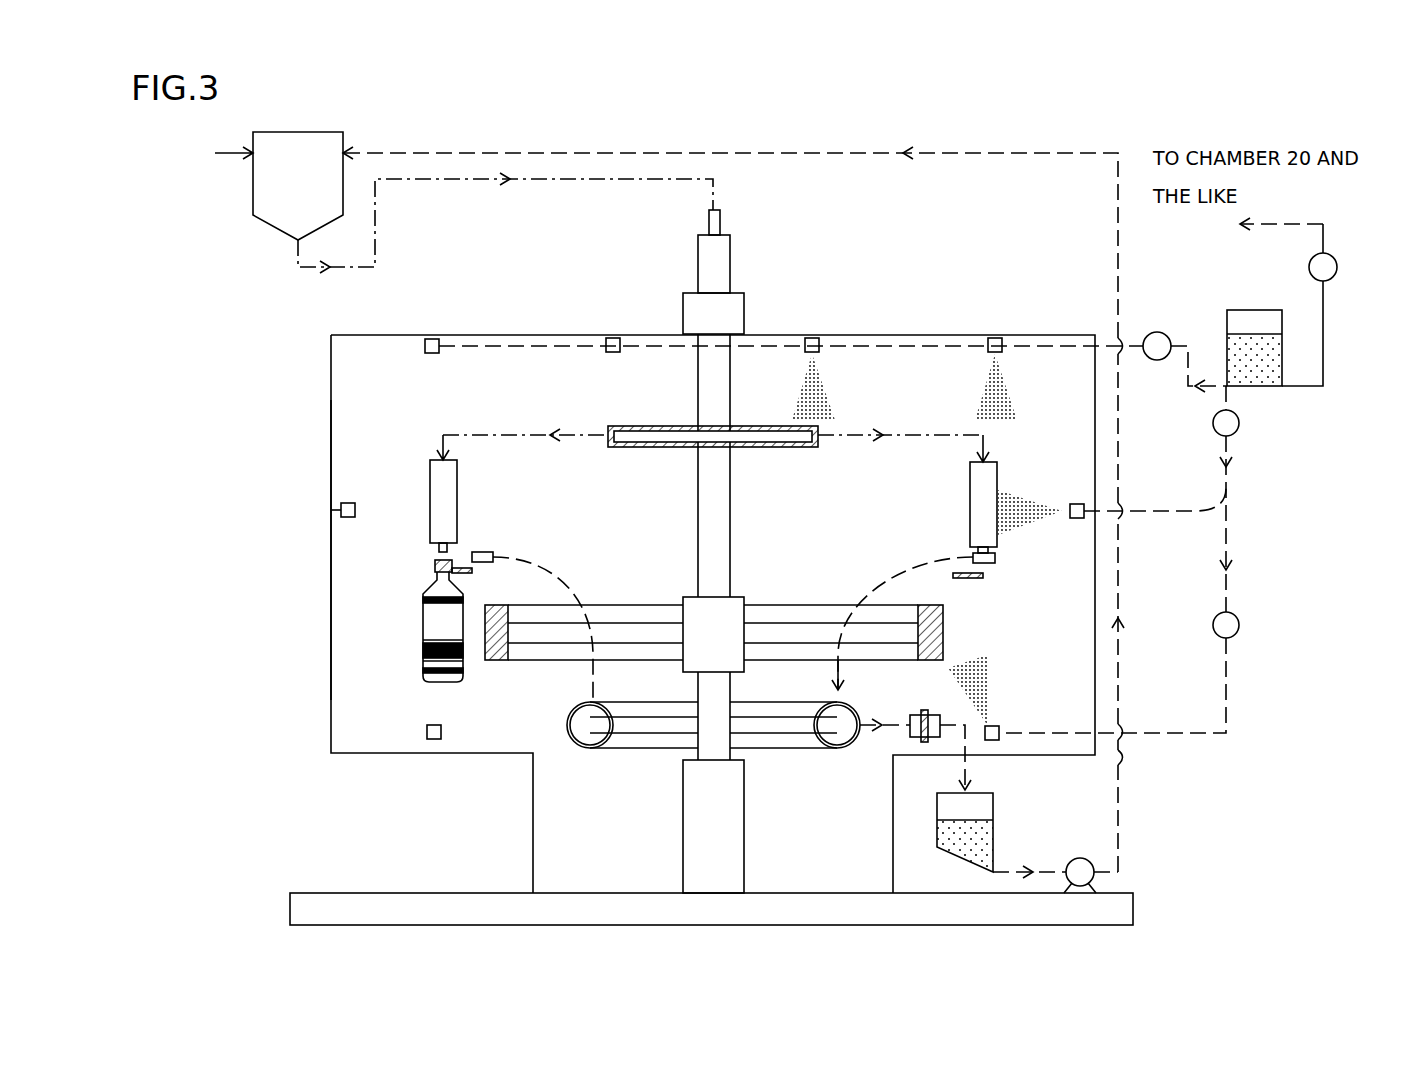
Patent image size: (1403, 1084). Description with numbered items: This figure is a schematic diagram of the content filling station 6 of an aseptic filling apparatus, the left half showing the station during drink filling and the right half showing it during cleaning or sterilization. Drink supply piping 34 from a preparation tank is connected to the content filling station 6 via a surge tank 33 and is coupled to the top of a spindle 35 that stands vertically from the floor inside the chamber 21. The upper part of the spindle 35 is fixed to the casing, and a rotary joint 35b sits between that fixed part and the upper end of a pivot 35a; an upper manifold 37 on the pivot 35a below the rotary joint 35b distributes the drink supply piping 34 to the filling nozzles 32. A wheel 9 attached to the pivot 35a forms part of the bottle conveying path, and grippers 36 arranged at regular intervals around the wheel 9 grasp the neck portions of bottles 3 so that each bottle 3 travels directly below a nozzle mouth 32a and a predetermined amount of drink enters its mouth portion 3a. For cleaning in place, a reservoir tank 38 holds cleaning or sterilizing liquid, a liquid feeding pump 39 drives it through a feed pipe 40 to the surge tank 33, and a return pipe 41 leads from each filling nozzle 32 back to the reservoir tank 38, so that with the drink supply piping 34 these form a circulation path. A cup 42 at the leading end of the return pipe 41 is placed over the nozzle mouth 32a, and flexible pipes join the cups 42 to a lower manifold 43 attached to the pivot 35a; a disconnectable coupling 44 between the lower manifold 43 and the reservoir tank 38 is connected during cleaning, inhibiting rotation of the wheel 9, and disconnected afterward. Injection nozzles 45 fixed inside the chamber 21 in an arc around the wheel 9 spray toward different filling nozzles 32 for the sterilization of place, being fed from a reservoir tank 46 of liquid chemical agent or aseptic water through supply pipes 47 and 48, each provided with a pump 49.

The bottle 3 is at (423, 630).
The mouth portion 3a is at (435, 565).
The content filling station 6 is at (378, 360).
The wheel 9 is at (925, 662).
The chamber 21 is at (331, 580).
The filling nozzle 32 is at (430, 483).
The nozzle mouth 32a is at (437, 547).
The surge tank 33 is at (262, 220).
The drink supply piping 34 is at (443, 180).
The spindle 35 is at (683, 790).
The pivot 35a is at (730, 548).
The rotary joint 35b is at (744, 316).
The gripper 36 is at (458, 562).
The upper manifold 37 is at (770, 426).
The reservoir tank 38 is at (965, 860).
The liquid feeding pump 39 is at (1080, 858).
The feed pipe 40 is at (977, 156).
The return pipe 41 is at (570, 570).
The cup 42 is at (483, 552).
The lower manifold 43 is at (800, 750).
The disconnectable coupling 44 is at (913, 740).
The injection nozzle 45 is at (438, 352).
The reservoir tank 46 is at (1232, 310).
The supply pipe 47 is at (895, 335).
The supply pipe 48 is at (1165, 512).
The pump 49 is at (1157, 332).